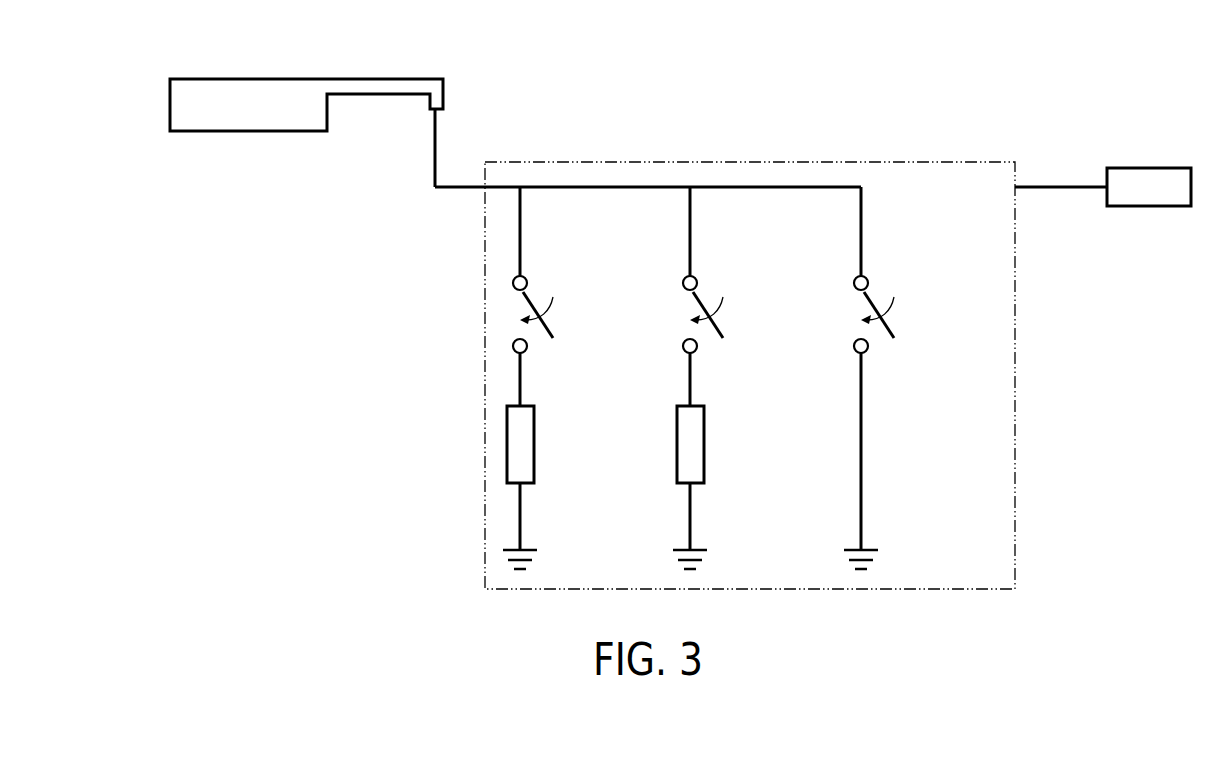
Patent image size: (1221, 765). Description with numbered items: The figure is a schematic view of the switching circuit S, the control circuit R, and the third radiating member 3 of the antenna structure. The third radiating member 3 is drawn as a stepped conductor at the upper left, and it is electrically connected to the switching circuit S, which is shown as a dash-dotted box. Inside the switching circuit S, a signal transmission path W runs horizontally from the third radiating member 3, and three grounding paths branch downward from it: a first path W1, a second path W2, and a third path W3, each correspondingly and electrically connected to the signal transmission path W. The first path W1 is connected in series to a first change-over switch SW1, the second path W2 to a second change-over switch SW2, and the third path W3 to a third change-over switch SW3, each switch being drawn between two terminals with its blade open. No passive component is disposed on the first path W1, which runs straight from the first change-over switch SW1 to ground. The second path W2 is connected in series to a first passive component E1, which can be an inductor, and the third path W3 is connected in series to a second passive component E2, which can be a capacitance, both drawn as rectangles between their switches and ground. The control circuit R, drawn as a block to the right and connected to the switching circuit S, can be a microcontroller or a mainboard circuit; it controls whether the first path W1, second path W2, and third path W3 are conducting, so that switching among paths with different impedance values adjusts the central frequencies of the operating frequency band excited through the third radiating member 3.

The third radiating member 3 is at (170, 107).
The signal transmission path W is at (617, 187).
The switching circuit S is at (765, 162).
The control circuit R is at (1149, 168).
The first path W1 is at (863, 232).
The second path W2 is at (692, 232).
The third path W3 is at (522, 232).
The first change-over switch SW1 is at (899, 323).
The second change-over switch SW2 is at (729, 323).
The third change-over switch SW3 is at (558, 323).
The first passive component E1 is at (705, 443).
The second passive component E2 is at (535, 443).